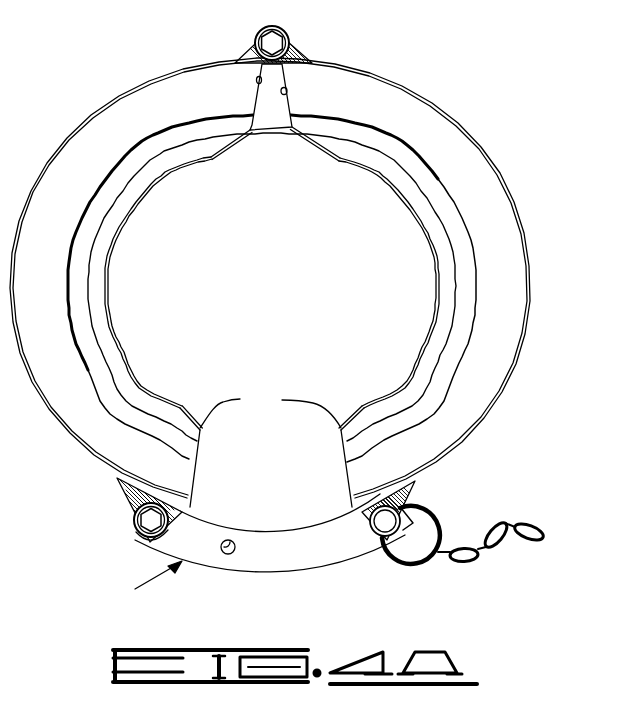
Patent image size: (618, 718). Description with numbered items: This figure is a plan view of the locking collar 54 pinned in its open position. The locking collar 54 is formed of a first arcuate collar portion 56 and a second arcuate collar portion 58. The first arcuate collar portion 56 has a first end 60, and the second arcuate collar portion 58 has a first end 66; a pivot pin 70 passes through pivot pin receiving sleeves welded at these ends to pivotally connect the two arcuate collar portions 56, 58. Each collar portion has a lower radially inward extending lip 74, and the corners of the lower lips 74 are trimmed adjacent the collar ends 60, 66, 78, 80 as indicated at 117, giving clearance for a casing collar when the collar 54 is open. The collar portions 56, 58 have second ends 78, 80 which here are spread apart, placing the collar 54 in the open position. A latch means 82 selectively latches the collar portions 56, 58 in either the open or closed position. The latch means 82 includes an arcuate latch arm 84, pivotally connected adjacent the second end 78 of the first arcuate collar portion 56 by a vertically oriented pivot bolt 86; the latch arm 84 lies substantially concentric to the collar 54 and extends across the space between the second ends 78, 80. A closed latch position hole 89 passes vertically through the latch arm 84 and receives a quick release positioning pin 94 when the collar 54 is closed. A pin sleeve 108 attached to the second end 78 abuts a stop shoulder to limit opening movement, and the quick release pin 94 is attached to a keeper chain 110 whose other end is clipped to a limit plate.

The locking collar 54 is at (450, 79).
The first arcuate collar portion 56 is at (103, 125).
The second arcuate collar portion 58 is at (472, 166).
The first end 60 is at (256, 82).
The first end 66 is at (287, 92).
The pivot pin 70 is at (278, 46).
The lower radially inward extending lip 74 is at (101, 263).
The second end 78 is at (194, 478).
The second end 80 is at (344, 467).
The latch means 82 is at (143, 582).
The arcuate latch arm 84 is at (289, 562).
The pivot bolt 86 is at (147, 520).
The closed latch position hole 89 is at (224, 554).
The quick release positioning pin 94 is at (388, 518).
The pin sleeve 108 is at (145, 538).
The keeper chain 110 is at (492, 548).
The trimmed corners of lower lips 117 is at (302, 148).